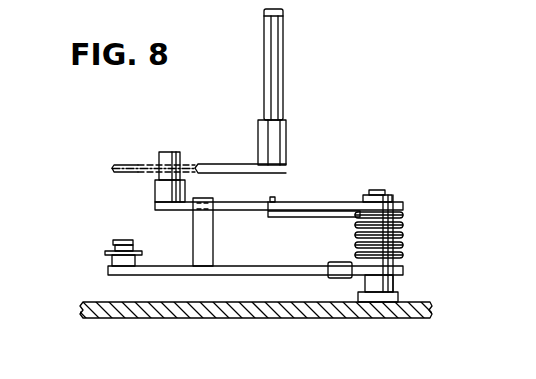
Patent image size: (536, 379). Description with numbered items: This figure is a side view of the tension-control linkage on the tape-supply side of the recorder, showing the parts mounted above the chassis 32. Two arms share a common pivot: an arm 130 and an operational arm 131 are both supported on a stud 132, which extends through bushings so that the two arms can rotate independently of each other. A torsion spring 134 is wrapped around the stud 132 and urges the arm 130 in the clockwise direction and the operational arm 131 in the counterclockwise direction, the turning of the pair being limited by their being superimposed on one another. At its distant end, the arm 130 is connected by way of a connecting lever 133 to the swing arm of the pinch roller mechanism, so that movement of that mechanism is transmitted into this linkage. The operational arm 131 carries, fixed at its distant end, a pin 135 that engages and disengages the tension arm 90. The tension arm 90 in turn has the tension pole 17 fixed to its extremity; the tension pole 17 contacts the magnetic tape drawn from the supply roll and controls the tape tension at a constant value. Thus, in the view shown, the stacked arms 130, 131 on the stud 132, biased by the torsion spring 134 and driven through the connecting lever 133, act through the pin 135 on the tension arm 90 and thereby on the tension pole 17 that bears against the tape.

The tension pole 17 is at (282, 45).
The tension arm 90 is at (233, 163).
The pin 135 is at (160, 152).
The operational arm 131 is at (252, 211).
The torsion spring 134 is at (332, 217).
The stud 132 is at (382, 190).
The arm 130 is at (175, 275).
The connecting lever 133 is at (105, 253).
The chassis 32 is at (378, 312).